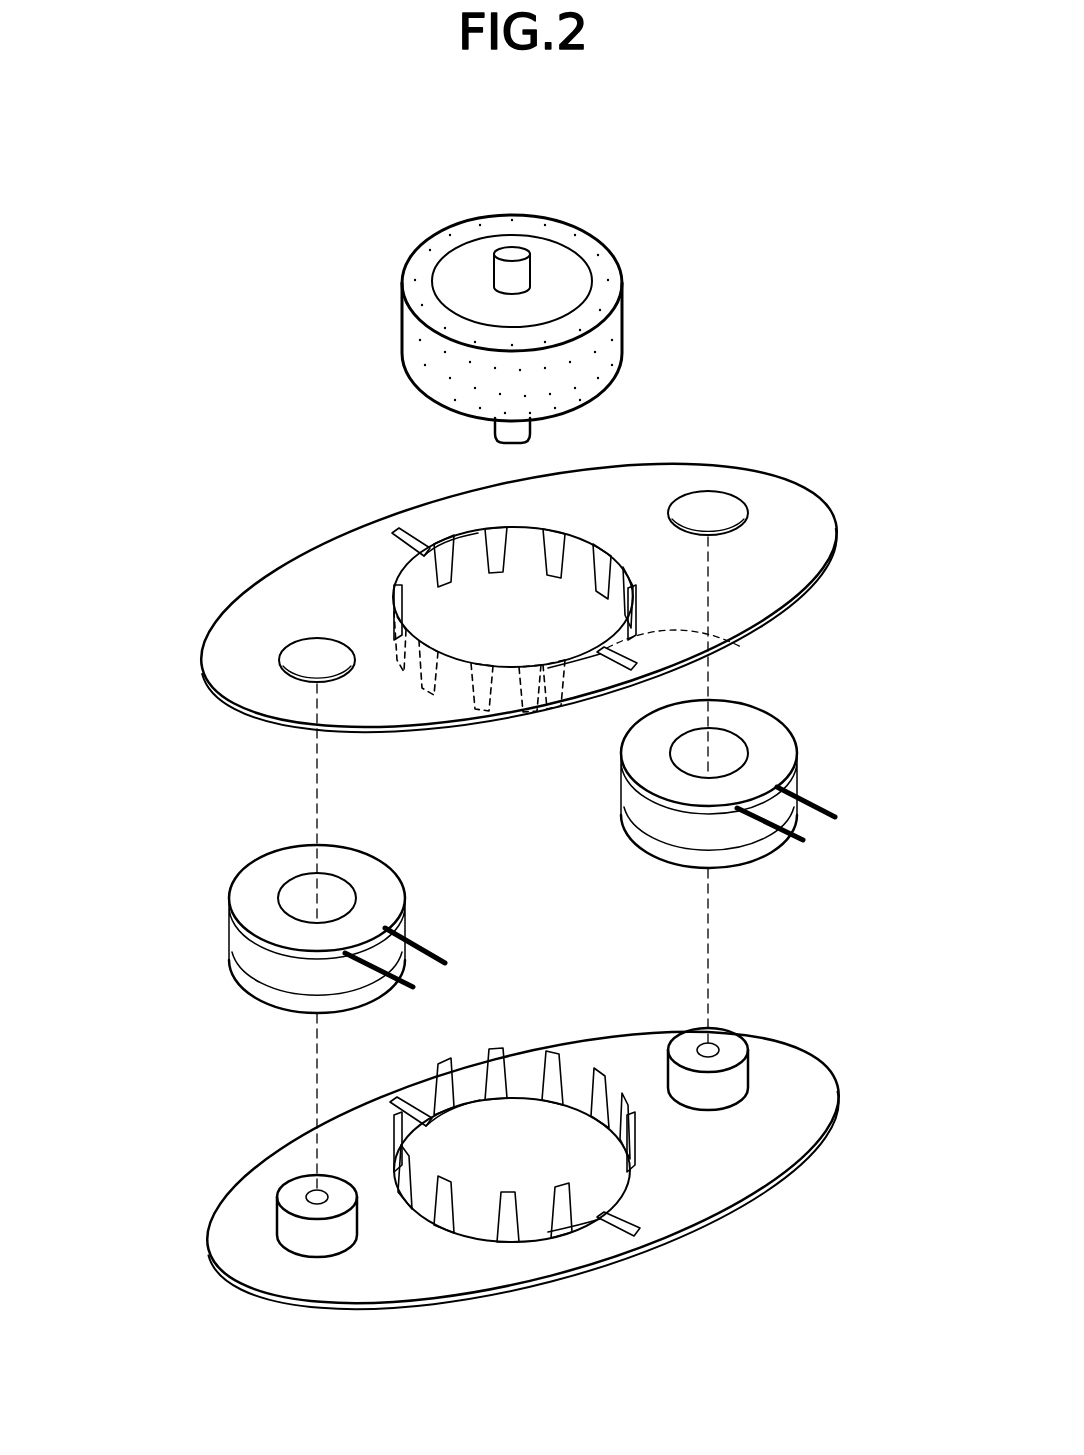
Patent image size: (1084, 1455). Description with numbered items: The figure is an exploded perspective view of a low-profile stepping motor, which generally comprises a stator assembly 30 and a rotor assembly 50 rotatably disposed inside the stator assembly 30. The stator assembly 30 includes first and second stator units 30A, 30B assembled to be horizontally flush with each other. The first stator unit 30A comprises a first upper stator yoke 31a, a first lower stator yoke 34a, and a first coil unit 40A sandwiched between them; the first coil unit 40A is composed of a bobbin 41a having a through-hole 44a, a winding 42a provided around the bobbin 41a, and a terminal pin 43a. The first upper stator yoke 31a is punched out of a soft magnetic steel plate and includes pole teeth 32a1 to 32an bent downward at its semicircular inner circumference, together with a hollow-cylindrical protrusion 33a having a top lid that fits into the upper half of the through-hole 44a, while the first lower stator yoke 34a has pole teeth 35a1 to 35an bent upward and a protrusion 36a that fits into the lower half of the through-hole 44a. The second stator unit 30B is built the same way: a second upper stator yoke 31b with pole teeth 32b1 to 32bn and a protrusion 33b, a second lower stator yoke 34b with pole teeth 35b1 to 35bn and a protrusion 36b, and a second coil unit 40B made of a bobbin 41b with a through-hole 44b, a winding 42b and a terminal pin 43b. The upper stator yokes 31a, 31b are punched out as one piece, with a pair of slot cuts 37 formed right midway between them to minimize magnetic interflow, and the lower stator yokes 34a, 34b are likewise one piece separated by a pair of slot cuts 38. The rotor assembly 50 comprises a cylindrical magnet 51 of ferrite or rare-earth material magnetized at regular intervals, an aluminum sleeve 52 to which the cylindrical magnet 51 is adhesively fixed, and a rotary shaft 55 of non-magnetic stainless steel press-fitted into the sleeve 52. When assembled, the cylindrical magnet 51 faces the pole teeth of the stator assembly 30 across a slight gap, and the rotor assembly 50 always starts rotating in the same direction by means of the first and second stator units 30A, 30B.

The stator assembly 30 is at (765, 405).
The first stator unit 30A is at (238, 580).
The second stator unit 30B is at (519, 556).
The first upper stator yoke 31a is at (262, 605).
The second upper stator yoke 31b is at (617, 482).
The pole teeth 32an is at (406, 592).
The pole teeth 32bn is at (515, 560).
The pole tooth 32a1 is at (555, 690).
The pole tooth 32b1 is at (703, 650).
The protrusion 33a is at (295, 657).
The protrusion 33b is at (722, 506).
The first lower stator yoke 34a is at (494, 1167).
The second lower stator yoke 34b is at (565, 1146).
The pole teeth 35an is at (408, 1140).
The pole teeth 35bn is at (480, 1090).
The pole tooth 35a1 is at (565, 1245).
The pole tooth 35b1 is at (636, 1160).
The protrusion 36a is at (283, 1228).
The protrusion 36b is at (720, 1040).
The slot cuts 37 is at (398, 530).
The slot cuts 38 is at (398, 1100).
The first coil unit 40A is at (315, 940).
The second coil unit 40B is at (727, 778).
The bobbin 41a is at (388, 880).
The bobbin 41b is at (640, 776).
The winding 42a is at (280, 984).
The winding 42b is at (755, 845).
The terminal pin 43a is at (440, 950).
The terminal pin 43b is at (815, 800).
The through-hole 44a is at (290, 899).
The through-hole 44b is at (740, 749).
The rotor assembly 50 is at (515, 300).
The cylindrical magnet 51 is at (412, 348).
The sleeve 52 is at (455, 271).
The rotary shaft 55 is at (515, 252).